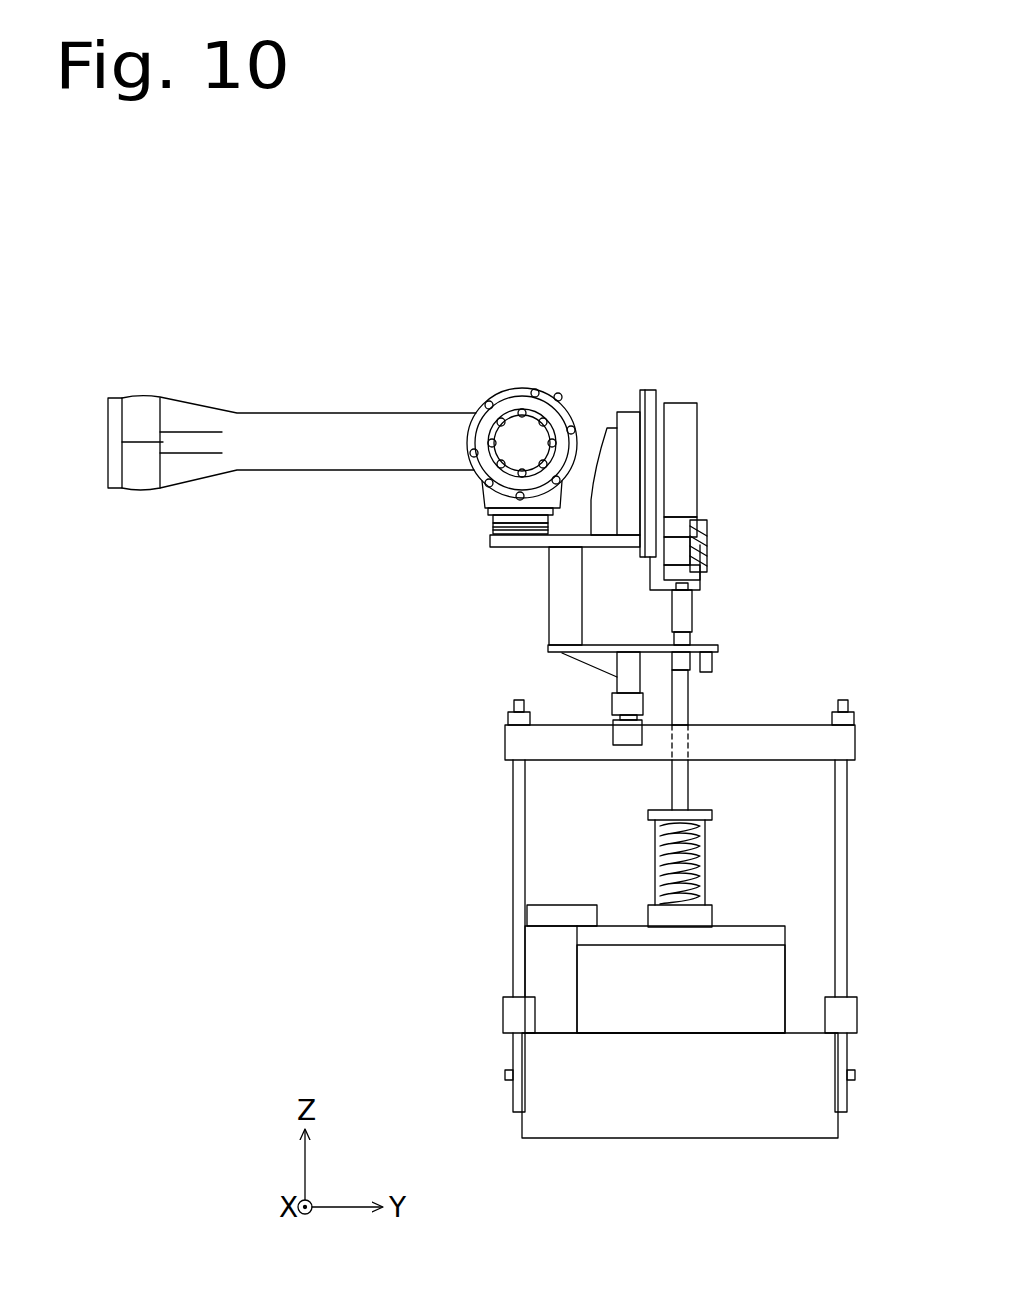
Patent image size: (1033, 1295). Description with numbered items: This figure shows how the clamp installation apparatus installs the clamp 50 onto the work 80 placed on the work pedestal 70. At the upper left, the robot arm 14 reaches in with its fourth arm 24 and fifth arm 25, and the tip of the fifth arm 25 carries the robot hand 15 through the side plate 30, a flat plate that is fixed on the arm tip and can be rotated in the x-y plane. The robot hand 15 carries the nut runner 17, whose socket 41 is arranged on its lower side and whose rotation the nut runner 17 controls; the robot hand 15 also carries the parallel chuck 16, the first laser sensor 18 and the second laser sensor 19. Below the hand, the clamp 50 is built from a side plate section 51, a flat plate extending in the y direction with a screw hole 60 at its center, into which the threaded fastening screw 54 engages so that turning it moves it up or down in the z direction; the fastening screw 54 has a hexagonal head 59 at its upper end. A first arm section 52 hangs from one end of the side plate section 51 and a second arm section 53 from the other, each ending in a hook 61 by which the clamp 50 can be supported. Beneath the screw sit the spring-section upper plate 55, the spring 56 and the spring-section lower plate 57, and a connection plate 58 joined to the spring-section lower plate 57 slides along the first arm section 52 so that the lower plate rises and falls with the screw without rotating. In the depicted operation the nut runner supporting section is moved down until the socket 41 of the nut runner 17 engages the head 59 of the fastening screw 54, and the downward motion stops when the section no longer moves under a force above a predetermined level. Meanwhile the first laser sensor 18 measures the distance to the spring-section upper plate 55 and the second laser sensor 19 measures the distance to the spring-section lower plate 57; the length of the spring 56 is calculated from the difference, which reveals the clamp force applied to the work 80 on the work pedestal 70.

The robot arm 14 is at (445, 336).
The fourth arm 24 is at (309, 430).
The fifth arm 25 is at (492, 512).
The robot hand 15 is at (484, 597).
The side plate 30 is at (492, 542).
The nut runner 17 is at (690, 446).
The socket 41 is at (688, 600).
The head 59 is at (690, 633).
The first laser sensor 18 is at (675, 660).
The second laser sensor 19 is at (711, 656).
The fastening screw 54 is at (684, 694).
The screw hole 60 is at (688, 723).
The parallel chuck 16 is at (614, 722).
The clamp 50 is at (460, 880).
The side plate section 51 is at (505, 741).
The first arm section 52 is at (513, 802).
The second arm section 53 is at (848, 802).
The spring-section upper plate 55 is at (712, 816).
The spring 56 is at (706, 862).
The connection plate 58 is at (580, 906).
The spring-section lower plate 57 is at (778, 932).
The work 80 is at (778, 993).
The hook 61 is at (510, 1014).
The work pedestal 70 is at (490, 1094).